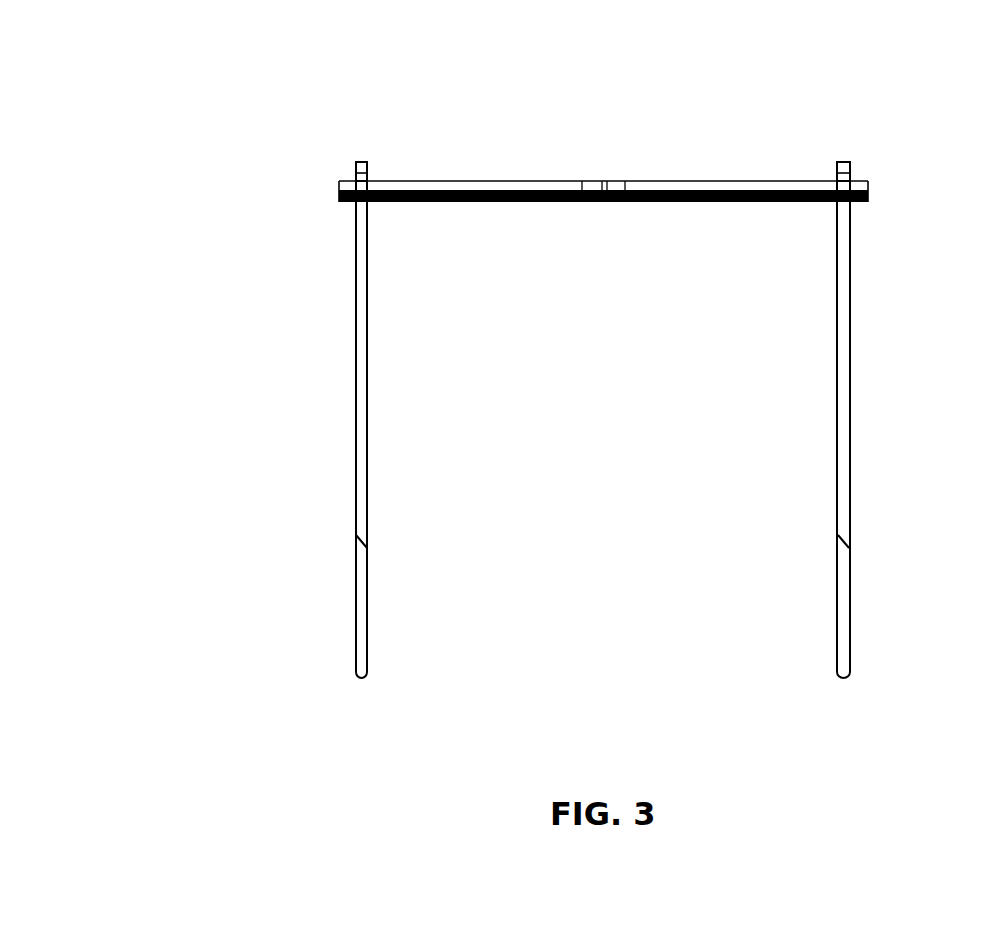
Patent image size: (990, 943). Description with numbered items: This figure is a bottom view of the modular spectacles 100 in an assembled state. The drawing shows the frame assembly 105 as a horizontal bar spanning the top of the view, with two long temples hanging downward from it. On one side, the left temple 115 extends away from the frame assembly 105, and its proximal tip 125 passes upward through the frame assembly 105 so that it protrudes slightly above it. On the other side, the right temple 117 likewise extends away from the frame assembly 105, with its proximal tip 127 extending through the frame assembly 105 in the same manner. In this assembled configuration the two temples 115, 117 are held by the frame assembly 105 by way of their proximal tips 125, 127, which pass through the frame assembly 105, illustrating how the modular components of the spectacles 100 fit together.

The modular spectacles 100 is at (230, 227).
The frame assembly 105 is at (780, 181).
The left temple 115 is at (850, 360).
The right temple 117 is at (355, 367).
The proximal tip 125 is at (845, 162).
The proximal tip 127 is at (362, 162).